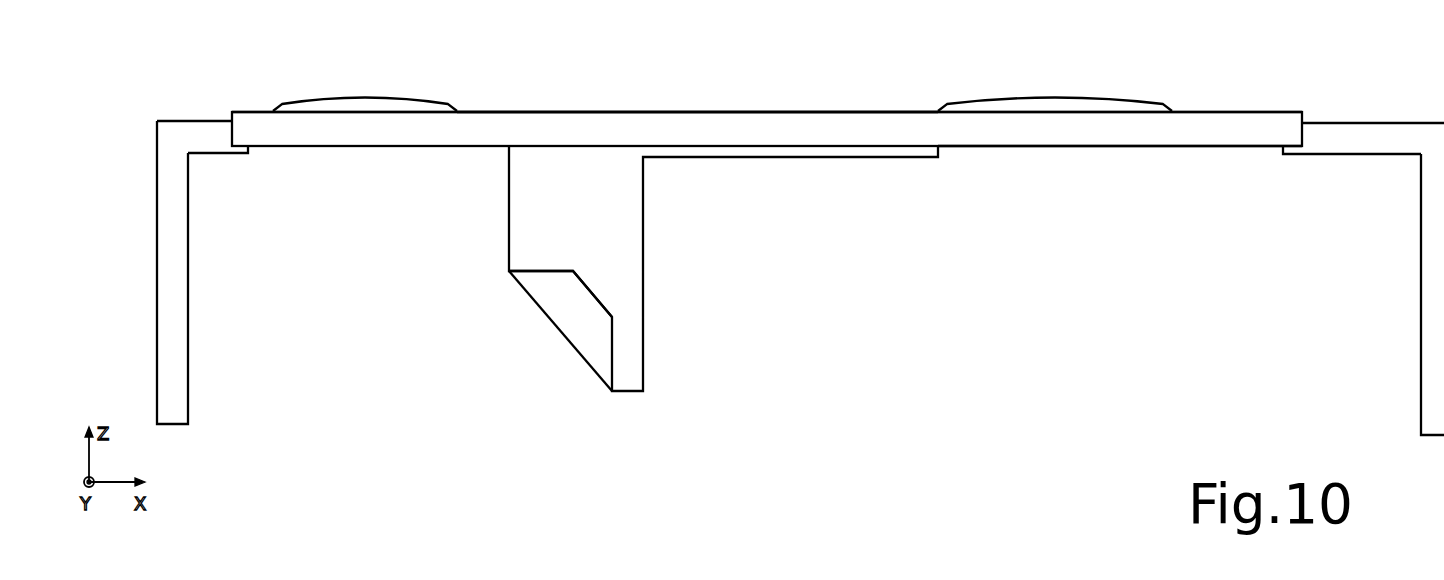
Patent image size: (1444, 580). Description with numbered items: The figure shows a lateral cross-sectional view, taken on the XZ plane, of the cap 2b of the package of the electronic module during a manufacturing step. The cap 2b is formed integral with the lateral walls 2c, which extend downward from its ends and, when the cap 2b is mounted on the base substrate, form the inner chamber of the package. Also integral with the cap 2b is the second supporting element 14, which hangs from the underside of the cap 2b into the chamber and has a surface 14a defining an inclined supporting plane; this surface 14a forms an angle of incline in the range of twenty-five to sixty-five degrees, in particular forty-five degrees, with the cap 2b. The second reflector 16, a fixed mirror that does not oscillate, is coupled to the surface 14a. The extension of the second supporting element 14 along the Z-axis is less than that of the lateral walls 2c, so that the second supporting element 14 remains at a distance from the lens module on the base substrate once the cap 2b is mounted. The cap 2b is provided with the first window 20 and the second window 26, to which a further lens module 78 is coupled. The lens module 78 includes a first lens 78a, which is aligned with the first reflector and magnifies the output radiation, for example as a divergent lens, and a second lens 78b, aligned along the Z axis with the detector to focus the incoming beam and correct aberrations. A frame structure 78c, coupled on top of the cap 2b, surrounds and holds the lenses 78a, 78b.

The cap 2b is at (202, 130).
The lateral walls 2c is at (168, 335).
The second supporting element 14 is at (617, 240).
The surface 14a is at (552, 330).
The second reflector 16 is at (537, 279).
The first window 20 is at (333, 152).
The second window 26 is at (1006, 152).
The lens module 78 is at (680, 107).
The first lens 78a is at (352, 105).
The second lens 78b is at (1058, 105).
The frame structure 78c is at (588, 123).